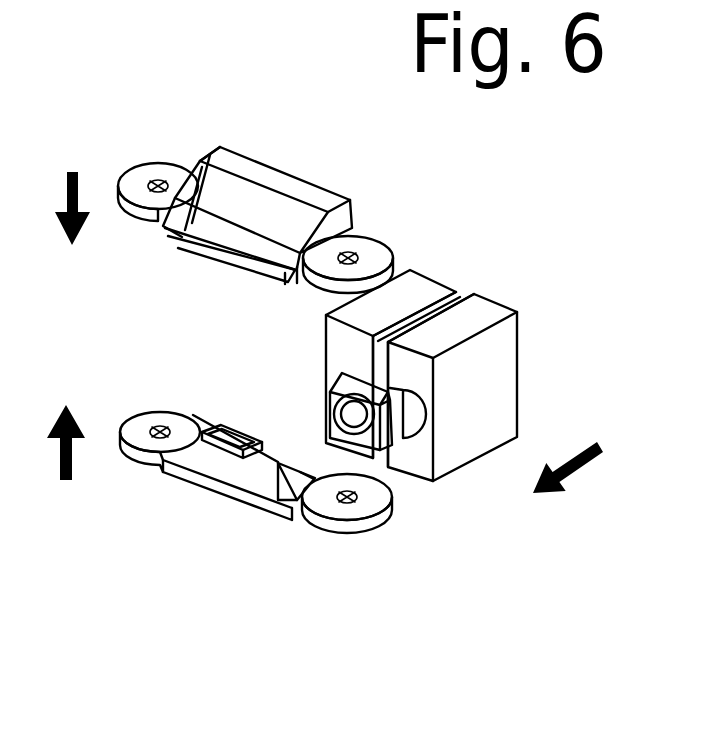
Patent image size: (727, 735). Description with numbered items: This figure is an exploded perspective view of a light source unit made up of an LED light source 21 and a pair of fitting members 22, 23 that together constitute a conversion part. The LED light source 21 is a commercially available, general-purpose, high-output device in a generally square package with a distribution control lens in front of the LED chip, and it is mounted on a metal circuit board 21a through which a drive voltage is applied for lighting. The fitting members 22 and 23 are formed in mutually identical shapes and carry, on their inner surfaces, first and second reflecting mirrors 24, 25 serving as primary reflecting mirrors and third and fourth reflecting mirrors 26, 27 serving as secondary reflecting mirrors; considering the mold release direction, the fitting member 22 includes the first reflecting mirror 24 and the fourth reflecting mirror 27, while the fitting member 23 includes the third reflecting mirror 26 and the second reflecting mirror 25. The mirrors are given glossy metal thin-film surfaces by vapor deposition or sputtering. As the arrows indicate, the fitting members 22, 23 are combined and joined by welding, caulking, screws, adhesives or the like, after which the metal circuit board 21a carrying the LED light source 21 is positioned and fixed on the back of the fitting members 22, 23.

The LED light source 21 is at (383, 452).
The metal circuit board 21a is at (433, 272).
The fitting member 22 is at (342, 188).
The fitting member 23 is at (225, 508).
The first reflecting mirror 24 is at (236, 235).
The second reflecting mirror 25 is at (187, 488).
The third reflecting mirror 26 is at (266, 495).
The fourth reflecting mirror 27 is at (220, 147).